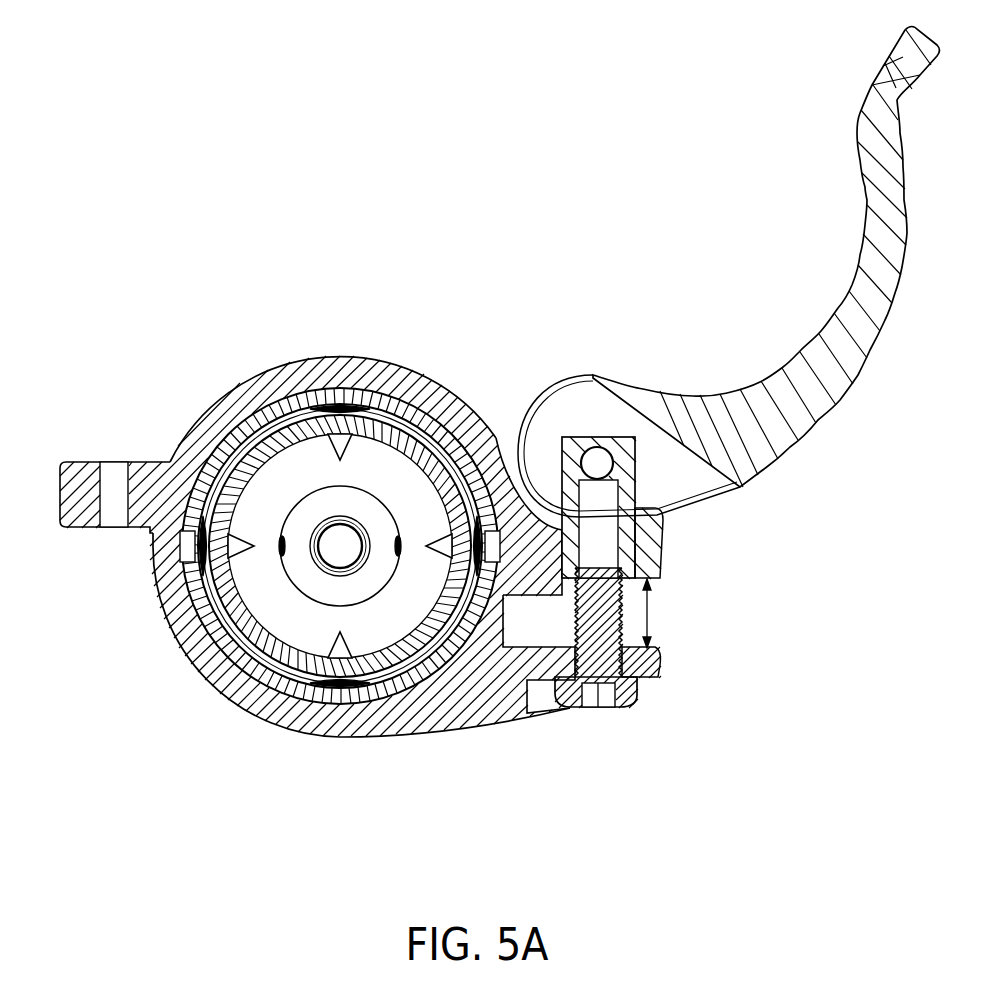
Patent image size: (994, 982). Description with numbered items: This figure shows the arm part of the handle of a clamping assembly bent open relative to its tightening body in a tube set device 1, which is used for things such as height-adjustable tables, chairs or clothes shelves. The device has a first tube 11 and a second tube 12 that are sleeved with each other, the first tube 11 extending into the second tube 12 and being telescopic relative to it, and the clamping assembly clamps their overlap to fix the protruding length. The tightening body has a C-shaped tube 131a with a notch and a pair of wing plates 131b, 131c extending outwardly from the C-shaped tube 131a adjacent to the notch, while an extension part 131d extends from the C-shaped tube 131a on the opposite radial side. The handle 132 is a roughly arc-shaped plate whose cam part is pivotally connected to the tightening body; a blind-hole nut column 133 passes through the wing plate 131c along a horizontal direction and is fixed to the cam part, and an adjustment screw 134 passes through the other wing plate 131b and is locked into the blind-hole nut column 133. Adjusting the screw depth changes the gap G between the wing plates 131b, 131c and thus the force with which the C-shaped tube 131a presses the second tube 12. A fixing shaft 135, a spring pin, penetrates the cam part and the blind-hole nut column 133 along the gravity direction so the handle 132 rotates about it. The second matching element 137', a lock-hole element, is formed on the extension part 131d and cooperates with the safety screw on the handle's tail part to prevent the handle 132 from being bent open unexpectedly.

The tube set device 1 is at (487, 418).
The first tube 11 is at (385, 428).
The second tube 12 is at (402, 410).
The C-shaped tube 131a is at (333, 733).
The wing plate 131b is at (478, 715).
The wing plate 131c is at (533, 583).
The extension part 131d is at (102, 458).
The second matching element 137' is at (130, 455).
The handle 132 is at (824, 414).
The blind-hole nut column 133 is at (620, 466).
The adjustment screw 134 is at (628, 692).
The fixing shaft 135 is at (597, 455).
The gap G is at (650, 613).